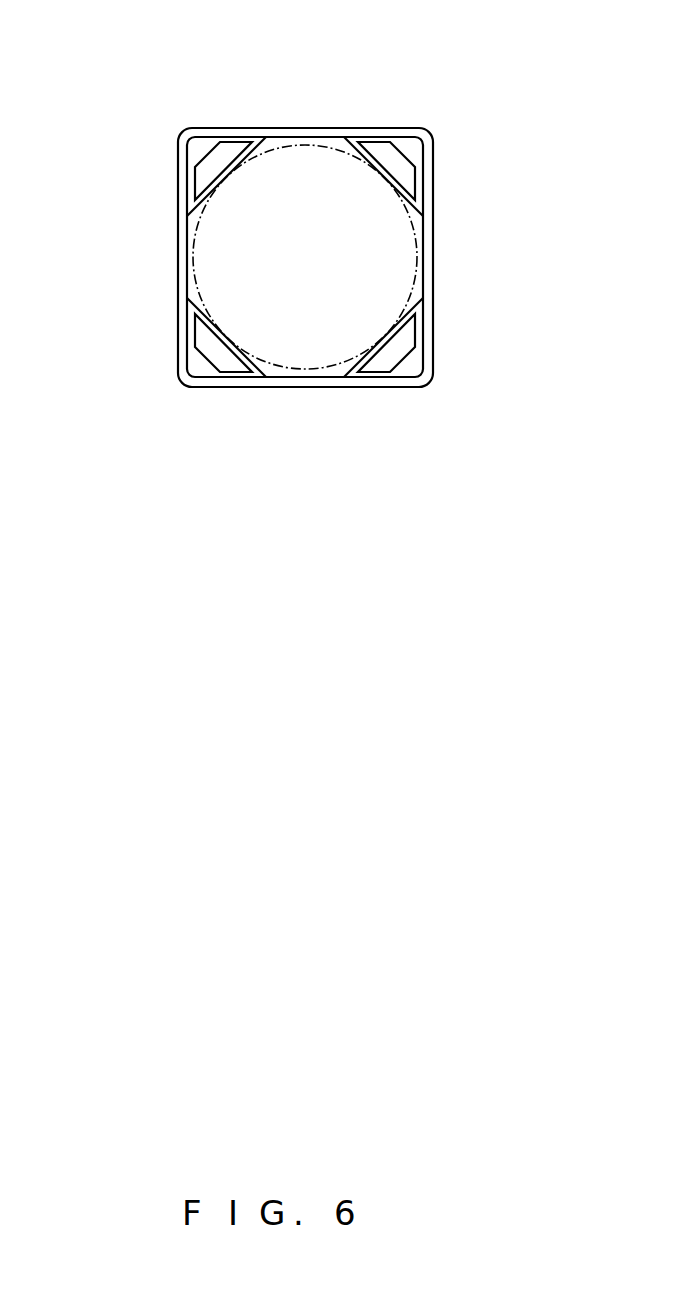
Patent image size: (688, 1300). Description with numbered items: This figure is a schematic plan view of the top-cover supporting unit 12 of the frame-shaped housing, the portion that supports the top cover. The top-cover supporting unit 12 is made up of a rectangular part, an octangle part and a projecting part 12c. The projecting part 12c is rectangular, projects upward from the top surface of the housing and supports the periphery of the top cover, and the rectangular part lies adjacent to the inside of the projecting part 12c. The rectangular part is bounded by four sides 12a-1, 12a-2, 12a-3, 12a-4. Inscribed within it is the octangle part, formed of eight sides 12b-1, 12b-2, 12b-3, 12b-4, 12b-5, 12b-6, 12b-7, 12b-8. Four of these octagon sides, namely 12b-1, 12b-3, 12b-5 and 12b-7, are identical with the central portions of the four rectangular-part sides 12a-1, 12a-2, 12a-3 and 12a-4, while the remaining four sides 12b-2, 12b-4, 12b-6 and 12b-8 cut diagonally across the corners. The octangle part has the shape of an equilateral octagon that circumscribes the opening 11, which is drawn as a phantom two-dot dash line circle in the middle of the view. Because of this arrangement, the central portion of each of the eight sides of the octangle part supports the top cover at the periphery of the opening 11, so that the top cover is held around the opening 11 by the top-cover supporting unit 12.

The opening 11 is at (305, 204).
The top-cover supporting unit 12 is at (301, 247).
The side of rectangular part 12a-1 is at (119, 257).
The side of rectangular part 12a-2 is at (315, 97).
The side of rectangular part 12a-3 is at (494, 257).
The side of rectangular part 12a-4 is at (295, 425).
The side of octangle part 12b-1 is at (119, 257).
The side of octangle part 12b-2 is at (228, 134).
The side of octangle part 12b-3 is at (305, 74).
The side of octangle part 12b-4 is at (447, 161).
The side of octangle part 12b-5 is at (490, 257).
The side of octangle part 12b-6 is at (400, 386).
The side of octangle part 12b-7 is at (305, 430).
The side of octangle part 12b-8 is at (173, 340).
The projecting part 12c is at (230, 257).